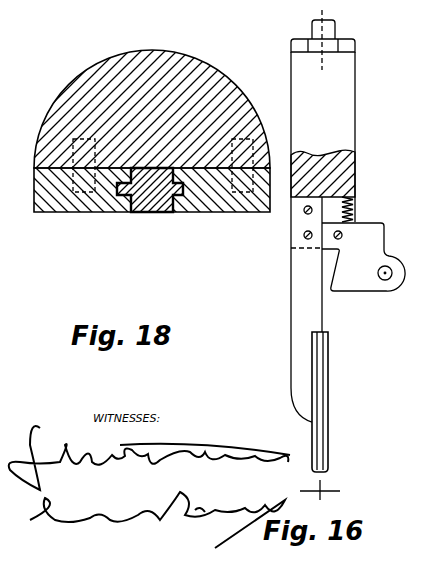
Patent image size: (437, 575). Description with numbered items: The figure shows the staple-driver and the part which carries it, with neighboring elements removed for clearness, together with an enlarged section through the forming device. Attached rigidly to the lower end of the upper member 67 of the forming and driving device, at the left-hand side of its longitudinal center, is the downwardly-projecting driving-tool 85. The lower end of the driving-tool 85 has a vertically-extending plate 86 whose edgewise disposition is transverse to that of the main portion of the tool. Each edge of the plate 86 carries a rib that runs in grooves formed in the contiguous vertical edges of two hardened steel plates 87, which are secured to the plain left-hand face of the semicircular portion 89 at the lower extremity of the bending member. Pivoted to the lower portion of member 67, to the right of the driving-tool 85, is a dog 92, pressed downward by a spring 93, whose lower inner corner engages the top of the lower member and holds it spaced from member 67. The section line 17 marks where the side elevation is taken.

In FIG. 16, the section line 17 is at (328, 5).
In FIG. 16, the upper member of the forming and driving device 67 is at (323, 204).
In FIG. 16, the driving-tool 85 is at (306, 309).
In FIG. 18, the vertically-extending plate 86 is at (155, 213).
In FIG. 16, the vertically-extending plate 86 is at (325, 418).
In FIG. 18, the hardened steel plate 87 is at (90, 212).
In FIG. 18, the semicircular portion 89 is at (167, 60).
In FIG. 16, the dog 92 is at (363, 257).
In FIG. 16, the spring 93 is at (354, 209).